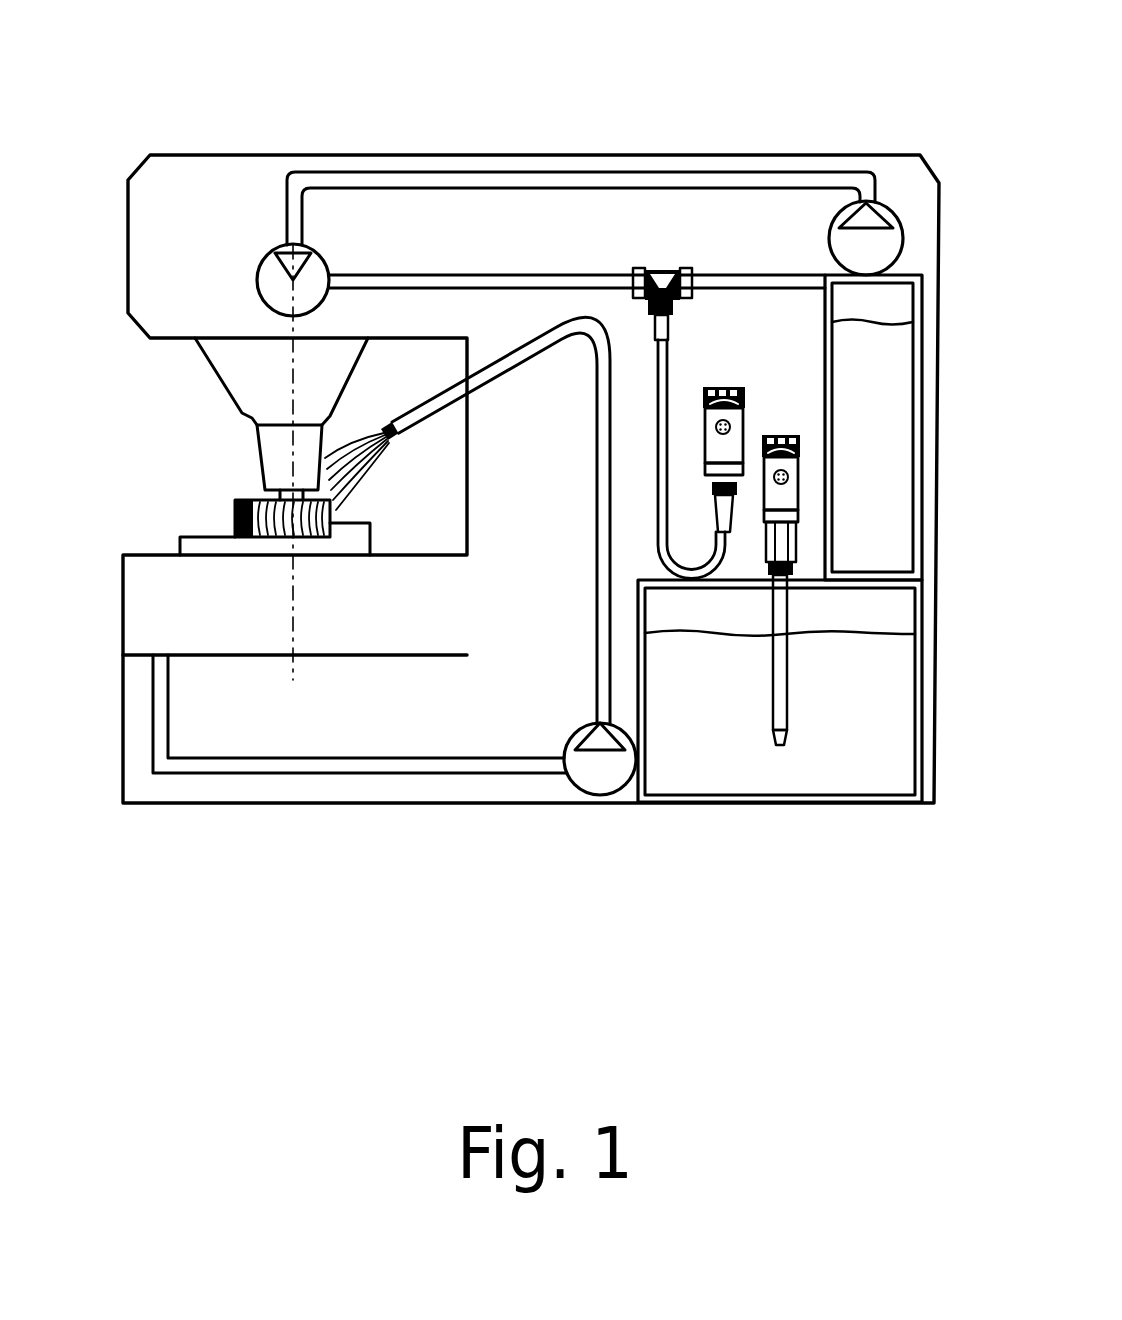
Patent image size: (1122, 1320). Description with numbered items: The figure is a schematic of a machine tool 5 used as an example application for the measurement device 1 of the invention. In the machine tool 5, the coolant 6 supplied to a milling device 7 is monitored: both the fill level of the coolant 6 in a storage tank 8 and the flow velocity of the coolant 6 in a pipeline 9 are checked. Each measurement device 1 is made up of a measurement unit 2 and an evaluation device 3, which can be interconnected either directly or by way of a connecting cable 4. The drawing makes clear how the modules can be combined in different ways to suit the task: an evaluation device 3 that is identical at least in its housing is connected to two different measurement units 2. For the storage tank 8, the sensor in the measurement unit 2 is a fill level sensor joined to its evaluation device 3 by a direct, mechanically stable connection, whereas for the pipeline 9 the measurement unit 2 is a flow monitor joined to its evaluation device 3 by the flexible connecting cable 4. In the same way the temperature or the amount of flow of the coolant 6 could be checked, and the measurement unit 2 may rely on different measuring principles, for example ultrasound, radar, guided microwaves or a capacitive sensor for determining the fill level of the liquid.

The measurement device 1 is at (745, 345).
The measurement unit 2 is at (672, 226).
The evaluation device 3 is at (800, 435).
The connecting cable 4 is at (657, 433).
The machine tool 5 is at (253, 812).
The coolant 6 is at (350, 492).
The milling device 7 is at (265, 477).
The storage tank 8 is at (660, 803).
The pipeline 9 is at (440, 272).